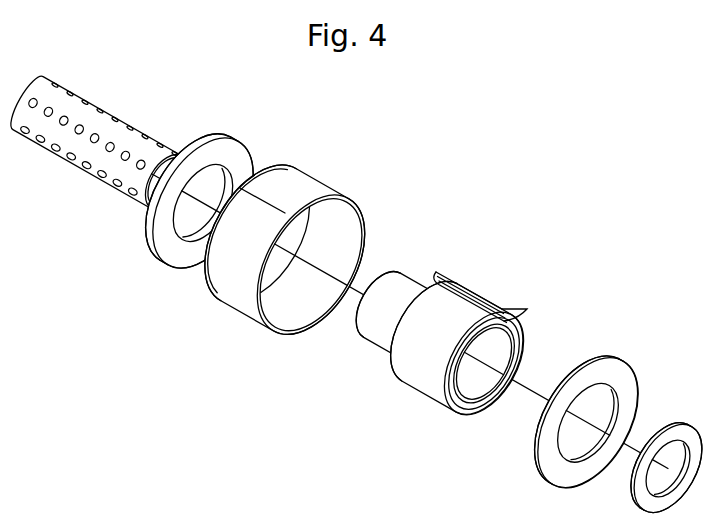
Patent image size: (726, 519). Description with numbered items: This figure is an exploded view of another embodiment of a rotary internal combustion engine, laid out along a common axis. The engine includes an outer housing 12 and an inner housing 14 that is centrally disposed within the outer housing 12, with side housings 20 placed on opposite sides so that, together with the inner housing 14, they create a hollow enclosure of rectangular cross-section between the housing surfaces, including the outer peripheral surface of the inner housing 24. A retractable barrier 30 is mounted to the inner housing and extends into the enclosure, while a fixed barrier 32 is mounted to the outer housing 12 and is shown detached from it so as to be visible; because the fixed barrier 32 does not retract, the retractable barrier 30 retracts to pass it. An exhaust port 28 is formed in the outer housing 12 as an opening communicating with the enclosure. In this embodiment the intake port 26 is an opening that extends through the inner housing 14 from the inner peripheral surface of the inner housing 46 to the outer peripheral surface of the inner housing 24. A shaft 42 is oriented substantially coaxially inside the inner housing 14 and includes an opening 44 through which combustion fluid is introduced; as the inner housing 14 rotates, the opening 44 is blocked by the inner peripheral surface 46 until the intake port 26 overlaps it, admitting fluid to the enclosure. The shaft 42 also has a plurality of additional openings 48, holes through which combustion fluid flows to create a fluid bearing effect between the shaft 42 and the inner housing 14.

The outer housing 12 is at (233, 293).
The inner housing 14 is at (430, 385).
The side housings 20 is at (237, 157).
The outer peripheral surface of the inner housing 24 is at (408, 368).
The intake port 26 is at (450, 292).
The exhaust port 28 is at (293, 185).
The retractable barrier 30 is at (497, 302).
The fixed barrier 32 is at (484, 296).
The shaft 42 is at (70, 145).
The opening 44 is at (108, 118).
The inner peripheral surface of the inner housing 46 is at (488, 382).
The additional openings 48 is at (132, 190).